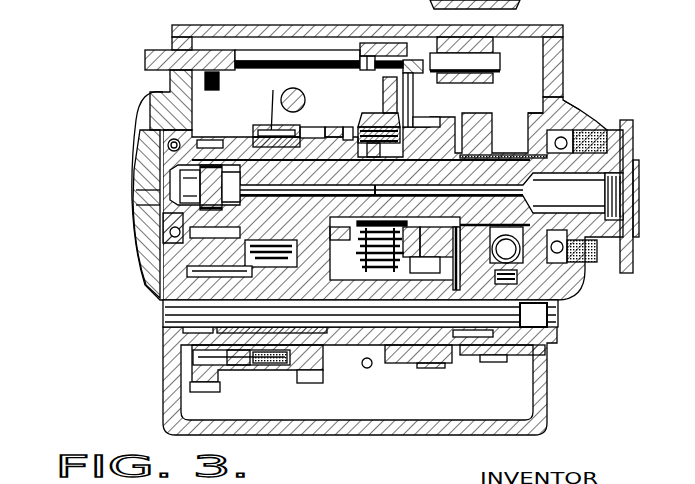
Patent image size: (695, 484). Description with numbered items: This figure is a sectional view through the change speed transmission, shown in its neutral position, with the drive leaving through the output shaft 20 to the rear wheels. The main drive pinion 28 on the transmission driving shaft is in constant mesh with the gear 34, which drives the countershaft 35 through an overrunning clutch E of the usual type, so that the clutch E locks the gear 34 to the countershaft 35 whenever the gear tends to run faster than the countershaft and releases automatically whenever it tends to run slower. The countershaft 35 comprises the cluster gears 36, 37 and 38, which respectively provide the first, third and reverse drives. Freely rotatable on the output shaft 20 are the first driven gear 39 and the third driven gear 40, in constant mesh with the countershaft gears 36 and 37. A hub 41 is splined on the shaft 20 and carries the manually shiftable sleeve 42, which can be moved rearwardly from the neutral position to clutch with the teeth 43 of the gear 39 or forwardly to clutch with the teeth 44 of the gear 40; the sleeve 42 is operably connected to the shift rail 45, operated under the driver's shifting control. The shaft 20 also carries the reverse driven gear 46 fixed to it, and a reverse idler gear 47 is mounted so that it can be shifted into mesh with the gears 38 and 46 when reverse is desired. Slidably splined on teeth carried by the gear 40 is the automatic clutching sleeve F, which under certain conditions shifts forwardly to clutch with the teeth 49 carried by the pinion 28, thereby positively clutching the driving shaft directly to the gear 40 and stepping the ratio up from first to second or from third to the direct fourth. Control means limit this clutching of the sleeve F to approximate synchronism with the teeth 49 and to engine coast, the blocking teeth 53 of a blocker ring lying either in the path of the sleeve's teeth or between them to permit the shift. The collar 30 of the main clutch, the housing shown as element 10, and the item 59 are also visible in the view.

The housing 10 is at (318, 4).
The output shaft 20 is at (625, 158).
The main drive pinion 28 is at (206, 140).
The collar 30 is at (493, 311).
The gear 34 is at (207, 386).
The countershaft 35 is at (402, 352).
The cluster gear 36 is at (448, 352).
The cluster gear 37 is at (312, 376).
The cluster gear 38 is at (478, 354).
The first driven gear 39 is at (441, 115).
The third driven gear 40 is at (325, 127).
The hub 41 is at (378, 184).
The manually shiftable sleeve 42 is at (412, 113).
The teeth 43 is at (421, 117).
The teeth 44 is at (347, 127).
The shift rail 45 is at (331, 60).
The reverse driven gear 46 is at (476, 117).
The reverse idler gear 47 is at (520, 315).
The teeth 49 is at (247, 120).
The blocking teeth 53 is at (268, 136).
The roller 59 is at (294, 89).
The overrunning clutch E is at (250, 358).
The automatic clutching sleeve F is at (270, 105).